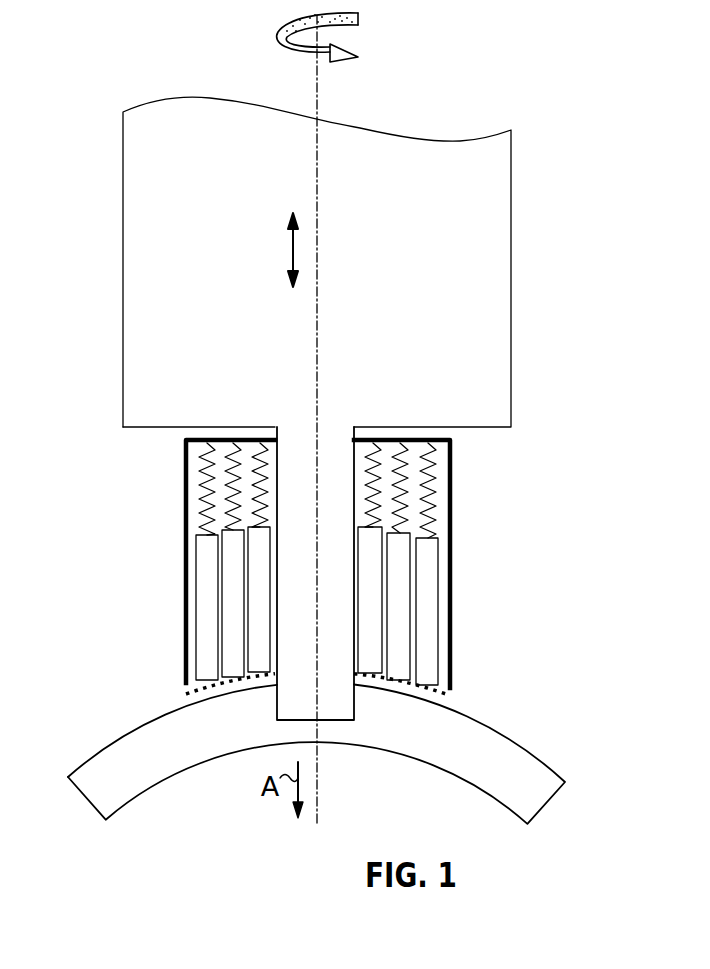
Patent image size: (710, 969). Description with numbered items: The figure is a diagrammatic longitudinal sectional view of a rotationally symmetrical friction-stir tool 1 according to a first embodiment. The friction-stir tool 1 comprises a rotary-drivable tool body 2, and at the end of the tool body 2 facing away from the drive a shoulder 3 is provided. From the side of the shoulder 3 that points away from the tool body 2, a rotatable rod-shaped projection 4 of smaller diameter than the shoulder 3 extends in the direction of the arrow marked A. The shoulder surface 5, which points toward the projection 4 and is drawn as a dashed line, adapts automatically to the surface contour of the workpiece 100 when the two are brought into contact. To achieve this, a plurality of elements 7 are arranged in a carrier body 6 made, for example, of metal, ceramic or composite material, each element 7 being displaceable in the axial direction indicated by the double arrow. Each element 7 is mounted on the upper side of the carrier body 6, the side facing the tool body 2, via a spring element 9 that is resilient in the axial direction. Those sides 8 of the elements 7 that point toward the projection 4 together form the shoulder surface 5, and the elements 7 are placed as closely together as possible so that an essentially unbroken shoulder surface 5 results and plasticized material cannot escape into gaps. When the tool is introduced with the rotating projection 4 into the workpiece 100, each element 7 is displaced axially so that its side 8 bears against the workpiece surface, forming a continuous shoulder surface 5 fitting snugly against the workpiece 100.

The friction-stir tool 1 is at (437, 106).
The tool body 2 is at (492, 265).
The shoulder 3 is at (440, 500).
The rod-shaped projection 4 is at (338, 712).
The shoulder surface 5 is at (452, 692).
The carrier body 6 is at (455, 458).
The elements 7 is at (206, 608).
The sides of the elements 8 is at (208, 680).
The spring element 9 is at (196, 500).
The workpiece 100 is at (500, 751).